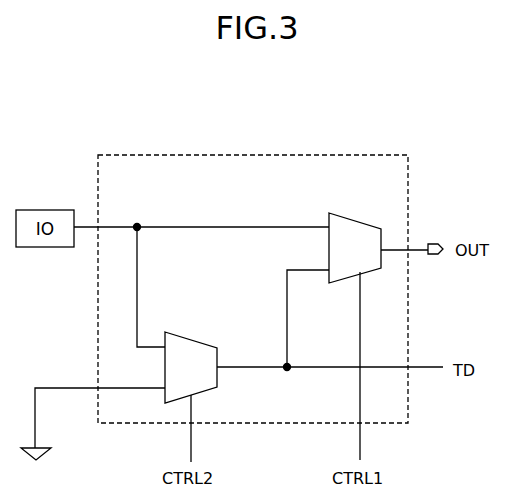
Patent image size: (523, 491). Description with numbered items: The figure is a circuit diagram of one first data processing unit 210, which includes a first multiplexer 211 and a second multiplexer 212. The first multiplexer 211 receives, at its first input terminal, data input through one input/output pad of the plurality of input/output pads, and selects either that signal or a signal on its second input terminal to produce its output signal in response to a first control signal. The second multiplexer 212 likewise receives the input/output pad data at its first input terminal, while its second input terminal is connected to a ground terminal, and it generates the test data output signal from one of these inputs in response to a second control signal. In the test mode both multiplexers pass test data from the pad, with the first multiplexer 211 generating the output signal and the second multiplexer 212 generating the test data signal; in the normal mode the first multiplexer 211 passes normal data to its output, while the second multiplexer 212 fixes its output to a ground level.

The first data processing unit 210 is at (330, 155).
The first multiplexer 211 is at (342, 214).
The second multiplexer 212 is at (180, 335).